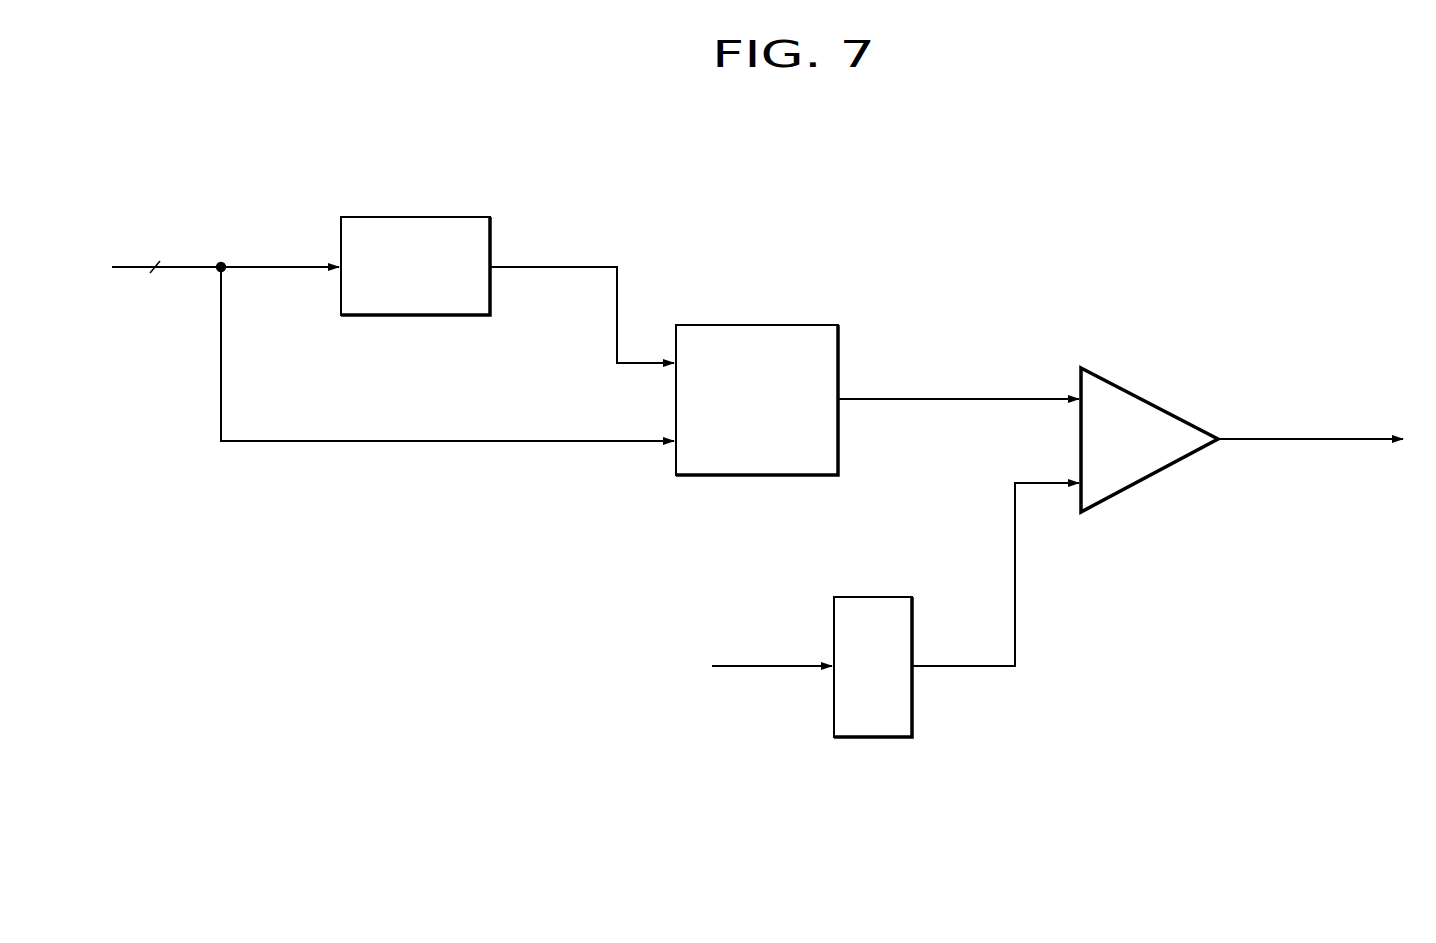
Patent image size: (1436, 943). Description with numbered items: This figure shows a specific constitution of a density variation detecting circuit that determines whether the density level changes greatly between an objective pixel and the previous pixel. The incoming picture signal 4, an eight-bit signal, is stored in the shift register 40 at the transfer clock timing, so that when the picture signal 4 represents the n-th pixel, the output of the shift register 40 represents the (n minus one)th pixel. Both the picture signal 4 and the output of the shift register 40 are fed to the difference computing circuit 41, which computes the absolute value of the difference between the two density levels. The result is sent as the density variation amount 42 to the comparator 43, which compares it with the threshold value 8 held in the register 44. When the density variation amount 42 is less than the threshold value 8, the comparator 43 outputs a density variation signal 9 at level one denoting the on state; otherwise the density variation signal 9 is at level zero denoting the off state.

The picture signal 4 is at (211, 252).
The threshold value 8 is at (681, 662).
The density variation signal 9 is at (1299, 483).
The shift register 40 is at (487, 217).
The difference computing circuit 41 is at (738, 325).
The density variation amount 42 is at (923, 399).
The comparator 43 is at (1138, 393).
The register 44 is at (912, 713).